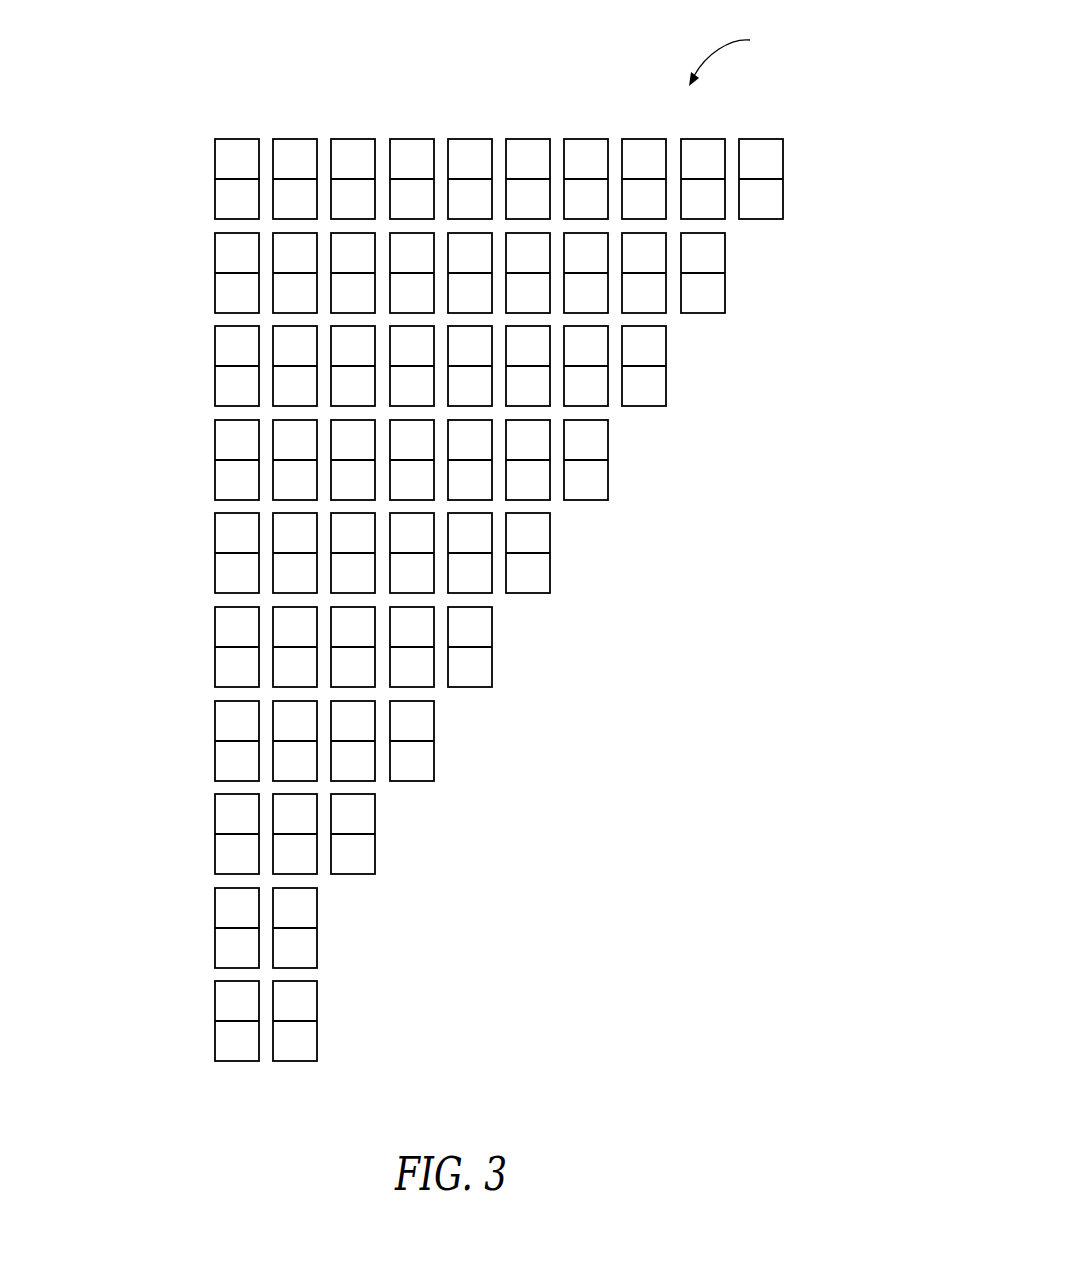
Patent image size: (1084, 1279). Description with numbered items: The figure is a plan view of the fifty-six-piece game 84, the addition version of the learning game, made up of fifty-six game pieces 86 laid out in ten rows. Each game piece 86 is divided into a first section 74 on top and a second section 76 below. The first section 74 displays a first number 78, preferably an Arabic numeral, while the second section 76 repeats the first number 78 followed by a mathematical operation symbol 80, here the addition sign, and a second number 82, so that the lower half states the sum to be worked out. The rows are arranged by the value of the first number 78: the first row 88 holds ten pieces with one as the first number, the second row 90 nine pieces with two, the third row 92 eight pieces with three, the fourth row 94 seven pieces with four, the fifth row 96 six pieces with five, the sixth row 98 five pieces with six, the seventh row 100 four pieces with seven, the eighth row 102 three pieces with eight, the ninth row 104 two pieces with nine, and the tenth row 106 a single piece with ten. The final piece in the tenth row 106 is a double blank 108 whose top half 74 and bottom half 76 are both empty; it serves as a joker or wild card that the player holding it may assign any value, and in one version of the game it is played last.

The first section 74 is at (270, 556).
The second section 76 is at (260, 620).
The first number 78 is at (179, 179).
The mathematical operation symbol 80 is at (203, 211).
The second number 82 is at (237, 135).
The 56-piece game 84 is at (418, 546).
The game piece 86 is at (247, 578).
The first row 88 is at (423, 578).
The second row 90 is at (394, 273).
The third row 92 is at (364, 366).
The fourth row 94 is at (335, 460).
The fifth row 96 is at (306, 553).
The sixth row 98 is at (277, 647).
The seventh row 100 is at (243, 741).
The eighth row 102 is at (214, 834).
The ninth row 104 is at (185, 928).
The tenth row 106 is at (156, 1021).
The double blank 108 is at (345, 1021).